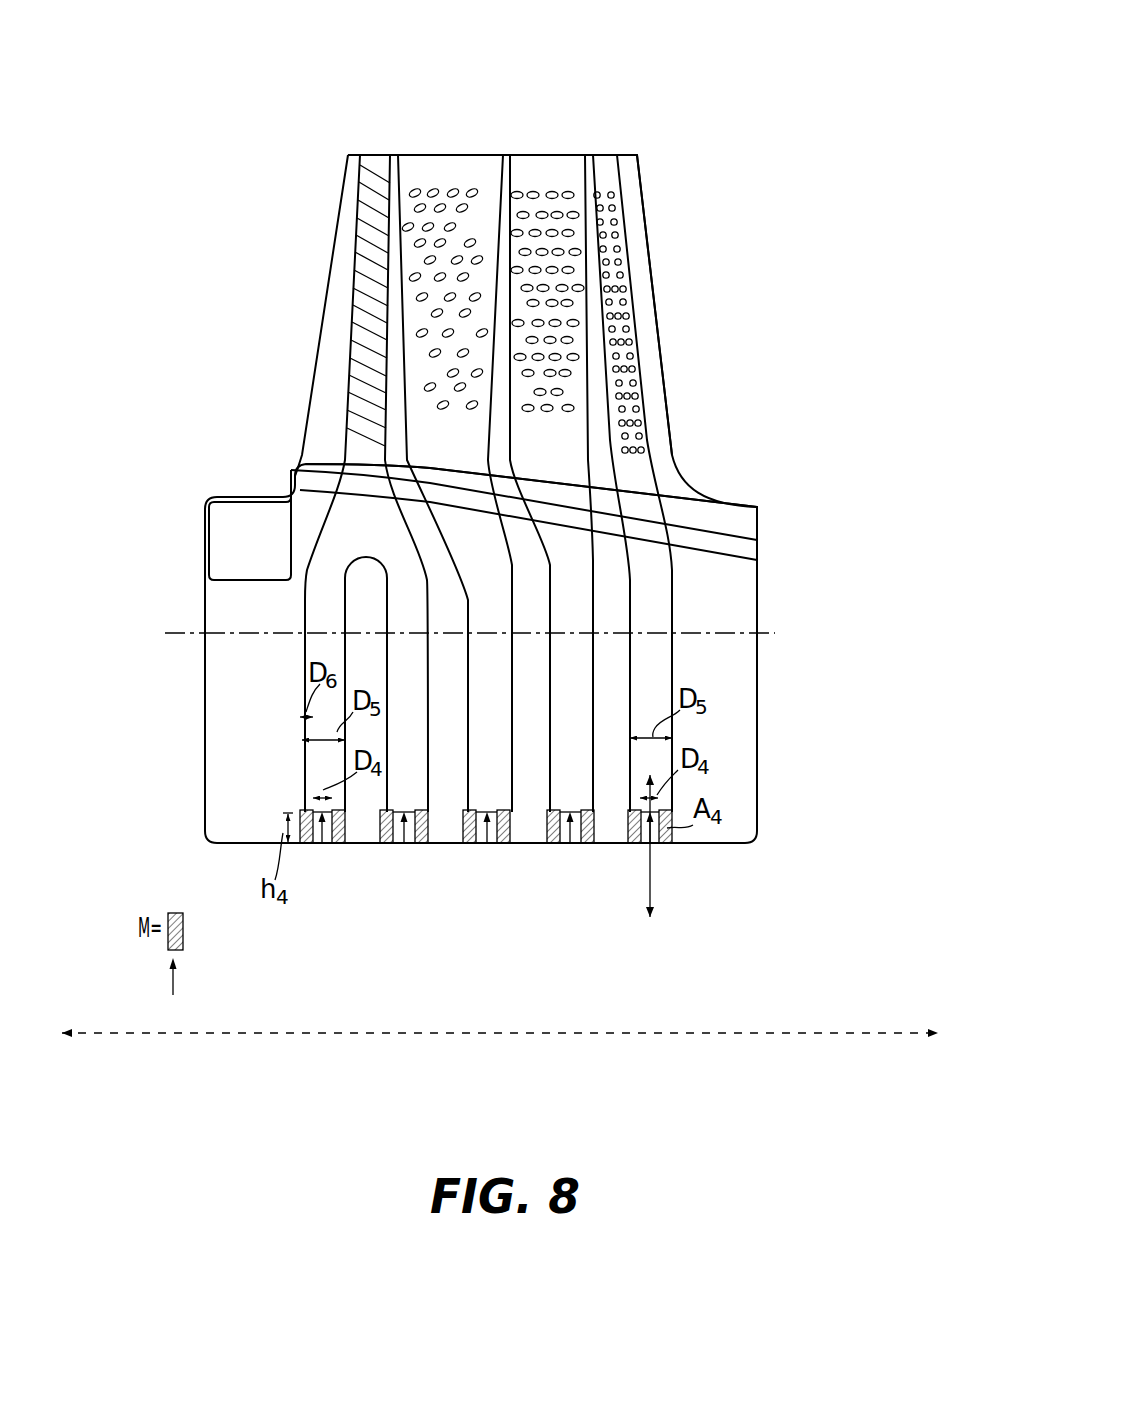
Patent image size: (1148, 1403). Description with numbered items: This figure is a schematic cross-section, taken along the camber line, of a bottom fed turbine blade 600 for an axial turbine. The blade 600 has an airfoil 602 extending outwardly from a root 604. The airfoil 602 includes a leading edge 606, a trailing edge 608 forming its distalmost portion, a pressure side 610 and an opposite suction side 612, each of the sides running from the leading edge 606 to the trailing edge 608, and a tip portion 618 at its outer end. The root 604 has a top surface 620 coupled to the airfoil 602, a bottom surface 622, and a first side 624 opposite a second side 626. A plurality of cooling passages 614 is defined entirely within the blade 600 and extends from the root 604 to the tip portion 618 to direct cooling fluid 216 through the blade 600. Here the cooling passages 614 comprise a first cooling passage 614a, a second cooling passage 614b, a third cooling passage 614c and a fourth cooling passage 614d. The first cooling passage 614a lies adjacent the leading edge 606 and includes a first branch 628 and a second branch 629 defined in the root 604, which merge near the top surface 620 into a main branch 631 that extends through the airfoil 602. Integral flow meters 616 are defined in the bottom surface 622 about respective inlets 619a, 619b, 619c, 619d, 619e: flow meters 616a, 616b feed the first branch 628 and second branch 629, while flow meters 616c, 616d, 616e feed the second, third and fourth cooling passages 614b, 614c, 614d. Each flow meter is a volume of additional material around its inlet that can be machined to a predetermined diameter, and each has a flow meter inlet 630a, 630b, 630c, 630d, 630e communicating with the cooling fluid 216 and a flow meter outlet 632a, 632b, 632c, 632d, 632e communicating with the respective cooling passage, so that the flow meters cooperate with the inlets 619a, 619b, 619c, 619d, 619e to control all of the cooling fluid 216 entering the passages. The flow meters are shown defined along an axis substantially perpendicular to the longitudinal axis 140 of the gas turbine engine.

The bottom fed turbine blade 600 is at (758, 88).
The airfoil 602 is at (760, 373).
The root 604 is at (813, 578).
The leading edge 606 is at (323, 320).
The trailing edge 608 is at (653, 297).
The pressure side 610 is at (565, 155).
The suction side 612 is at (527, 167).
The cooling passages 614 is at (280, 667).
The first cooling passage 614a is at (288, 797).
The second cooling passage 614b is at (460, 800).
The third cooling passage 614c is at (540, 803).
The fourth cooling passage 614d is at (622, 818).
The integral flow meters 616 is at (323, 863).
The first flow meter 616a is at (304, 845).
The second flow meter 616b is at (388, 845).
The third flow meter 616c is at (492, 845).
The fourth flow meter 616d is at (590, 845).
The fifth flow meter 616e is at (667, 845).
The tip portion 618 is at (423, 155).
The first inlet 619a is at (315, 845).
The second inlet 619b is at (400, 845).
The third inlet 619c is at (497, 845).
The fourth inlet 619d is at (577, 845).
The fifth inlet 619e is at (644, 845).
The top surface 620 is at (744, 503).
The bottom surface 622 is at (735, 845).
The first side 624 is at (205, 770).
The second side 626 is at (758, 702).
The first branch 628 is at (303, 617).
The second branch 629 is at (303, 582).
The first flow meter inlet 630a is at (339, 845).
The second flow meter inlet 630b is at (423, 845).
The third flow meter inlet 630c is at (484, 845).
The fourth flow meter inlet 630d is at (560, 845).
The fifth flow meter inlet 630e is at (661, 845).
The main branch 631 is at (362, 517).
The first flow meter outlet 632a is at (296, 800).
The second flow meter outlet 632b is at (404, 807).
The third flow meter outlet 632c is at (487, 808).
The fourth flow meter outlet 632d is at (570, 810).
The fifth flow meter outlet 632e is at (655, 800).
The longitudinal axis 140 is at (694, 1036).
The cooling fluid 216 is at (148, 977).